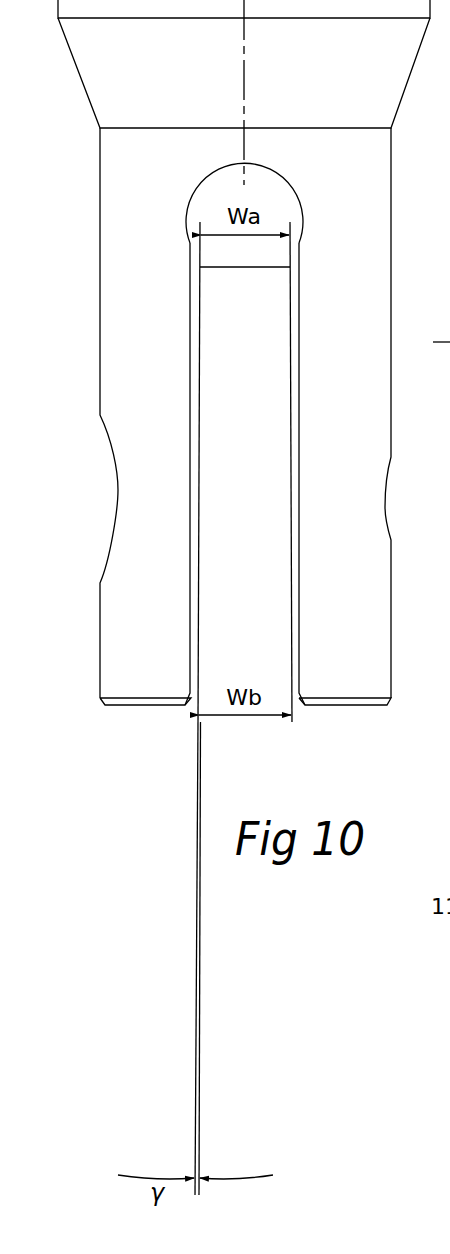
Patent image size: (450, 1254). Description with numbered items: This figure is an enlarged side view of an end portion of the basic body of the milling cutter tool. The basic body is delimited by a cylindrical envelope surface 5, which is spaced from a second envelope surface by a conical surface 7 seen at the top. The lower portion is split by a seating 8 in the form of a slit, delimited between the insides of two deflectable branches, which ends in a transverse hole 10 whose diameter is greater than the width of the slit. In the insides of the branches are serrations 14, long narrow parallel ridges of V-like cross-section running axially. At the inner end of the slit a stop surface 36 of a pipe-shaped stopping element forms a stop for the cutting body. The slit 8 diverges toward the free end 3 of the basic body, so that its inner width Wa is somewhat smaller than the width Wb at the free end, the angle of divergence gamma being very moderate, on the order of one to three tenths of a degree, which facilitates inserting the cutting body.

The end 3 is at (142, 705).
The cylindrical envelope surface 5 is at (335, 386).
The conical surface 7 is at (291, 98).
The seating 8 is at (275, 343).
The transverse hole 10 is at (292, 189).
The serrations 14 is at (200, 410).
The stop surface 36 is at (237, 267).